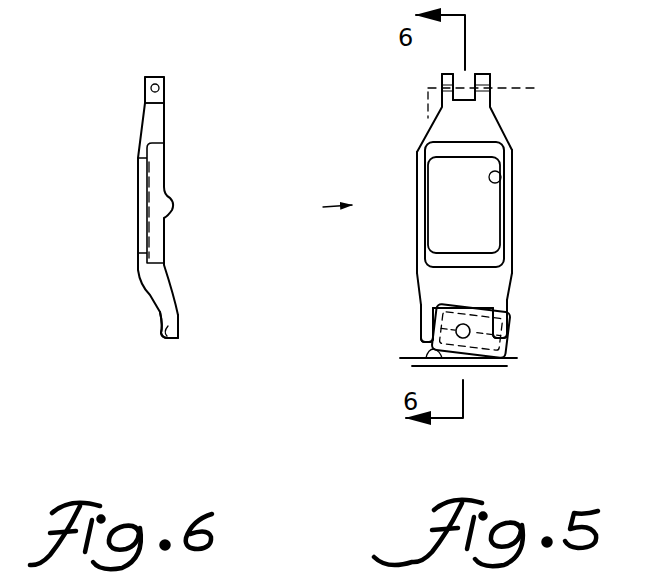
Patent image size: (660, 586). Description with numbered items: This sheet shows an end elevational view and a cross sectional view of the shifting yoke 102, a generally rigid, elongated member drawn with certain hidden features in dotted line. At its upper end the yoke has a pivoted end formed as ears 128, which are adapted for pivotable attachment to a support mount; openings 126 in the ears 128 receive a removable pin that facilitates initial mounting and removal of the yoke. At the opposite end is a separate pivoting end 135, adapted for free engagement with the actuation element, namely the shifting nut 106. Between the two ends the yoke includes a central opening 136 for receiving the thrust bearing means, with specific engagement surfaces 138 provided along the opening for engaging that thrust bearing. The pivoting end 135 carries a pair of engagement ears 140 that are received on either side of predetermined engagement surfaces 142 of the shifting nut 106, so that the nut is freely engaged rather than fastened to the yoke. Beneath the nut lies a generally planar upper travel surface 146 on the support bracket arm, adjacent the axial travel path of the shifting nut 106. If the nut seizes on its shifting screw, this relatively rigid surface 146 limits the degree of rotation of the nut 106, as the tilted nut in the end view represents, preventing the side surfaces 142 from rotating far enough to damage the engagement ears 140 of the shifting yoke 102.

In FIG. 6, the shifting yoke 102 is at (197, 234).
In FIG. 5, the shifting yoke 102 is at (352, 170).
In FIG. 5, the shifting nut 106 is at (510, 338).
In FIG. 6, the openings 126 is at (150, 89).
In FIG. 5, the openings 126 is at (426, 119).
In FIG. 6, the ears 128 is at (165, 86).
In FIG. 5, the ears 128 is at (442, 76).
In FIG. 6, the pivoting end 135 is at (208, 332).
In FIG. 5, the pivoting end 135 is at (388, 320).
In FIG. 5, the central opening 136 is at (498, 180).
In FIG. 5, the engagement surfaces 138 is at (513, 208).
In FIG. 6, the engagement ears 140 is at (164, 336).
In FIG. 5, the engagement ears 140 is at (426, 318).
In FIG. 5, the engagement surfaces 142 is at (418, 345).
In FIG. 5, the upper travel surface 146 is at (441, 358).